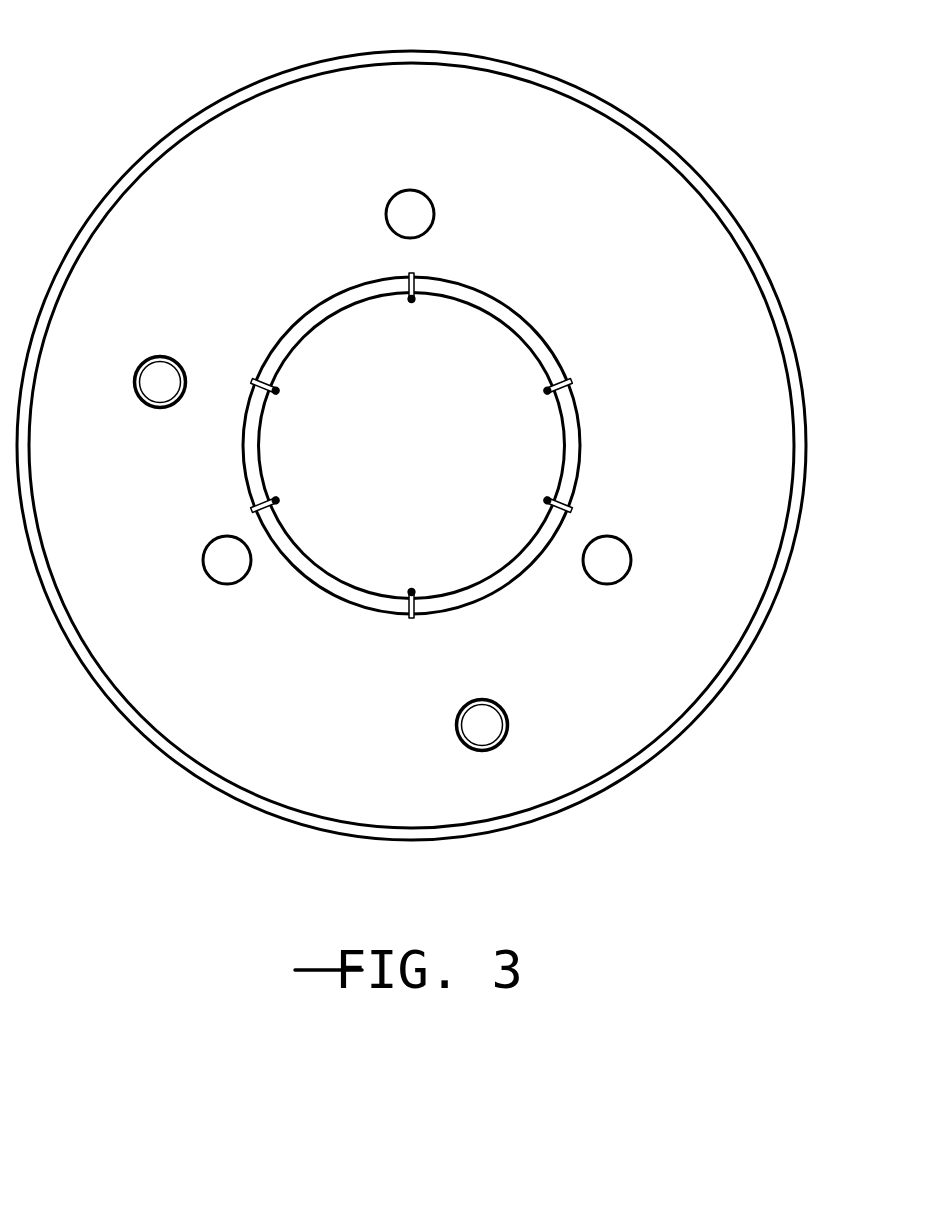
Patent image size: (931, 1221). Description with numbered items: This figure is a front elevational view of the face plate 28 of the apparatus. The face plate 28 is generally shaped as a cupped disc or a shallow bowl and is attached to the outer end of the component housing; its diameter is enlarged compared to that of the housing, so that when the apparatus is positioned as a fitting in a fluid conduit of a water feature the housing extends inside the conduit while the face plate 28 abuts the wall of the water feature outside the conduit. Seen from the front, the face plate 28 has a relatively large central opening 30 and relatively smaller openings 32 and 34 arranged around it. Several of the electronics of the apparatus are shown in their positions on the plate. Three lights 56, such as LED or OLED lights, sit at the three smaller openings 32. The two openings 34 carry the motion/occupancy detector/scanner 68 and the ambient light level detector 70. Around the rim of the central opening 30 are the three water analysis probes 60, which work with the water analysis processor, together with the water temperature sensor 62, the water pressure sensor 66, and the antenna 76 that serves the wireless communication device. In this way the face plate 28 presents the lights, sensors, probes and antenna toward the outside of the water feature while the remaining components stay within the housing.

The face plate 28 is at (212, 66).
The central opening 30 is at (317, 335).
The openings 32 is at (409, 396).
The openings 34 is at (342, 519).
The lights 56 is at (405, 207).
The water analysis probes 60 is at (412, 300).
The water temperature sensor 62 is at (284, 386).
The water pressure sensor 66 is at (413, 587).
The motion/occupancy detector/scanner 68 is at (163, 368).
The ambient light level detector 70 is at (471, 725).
The antenna 76 is at (546, 387).